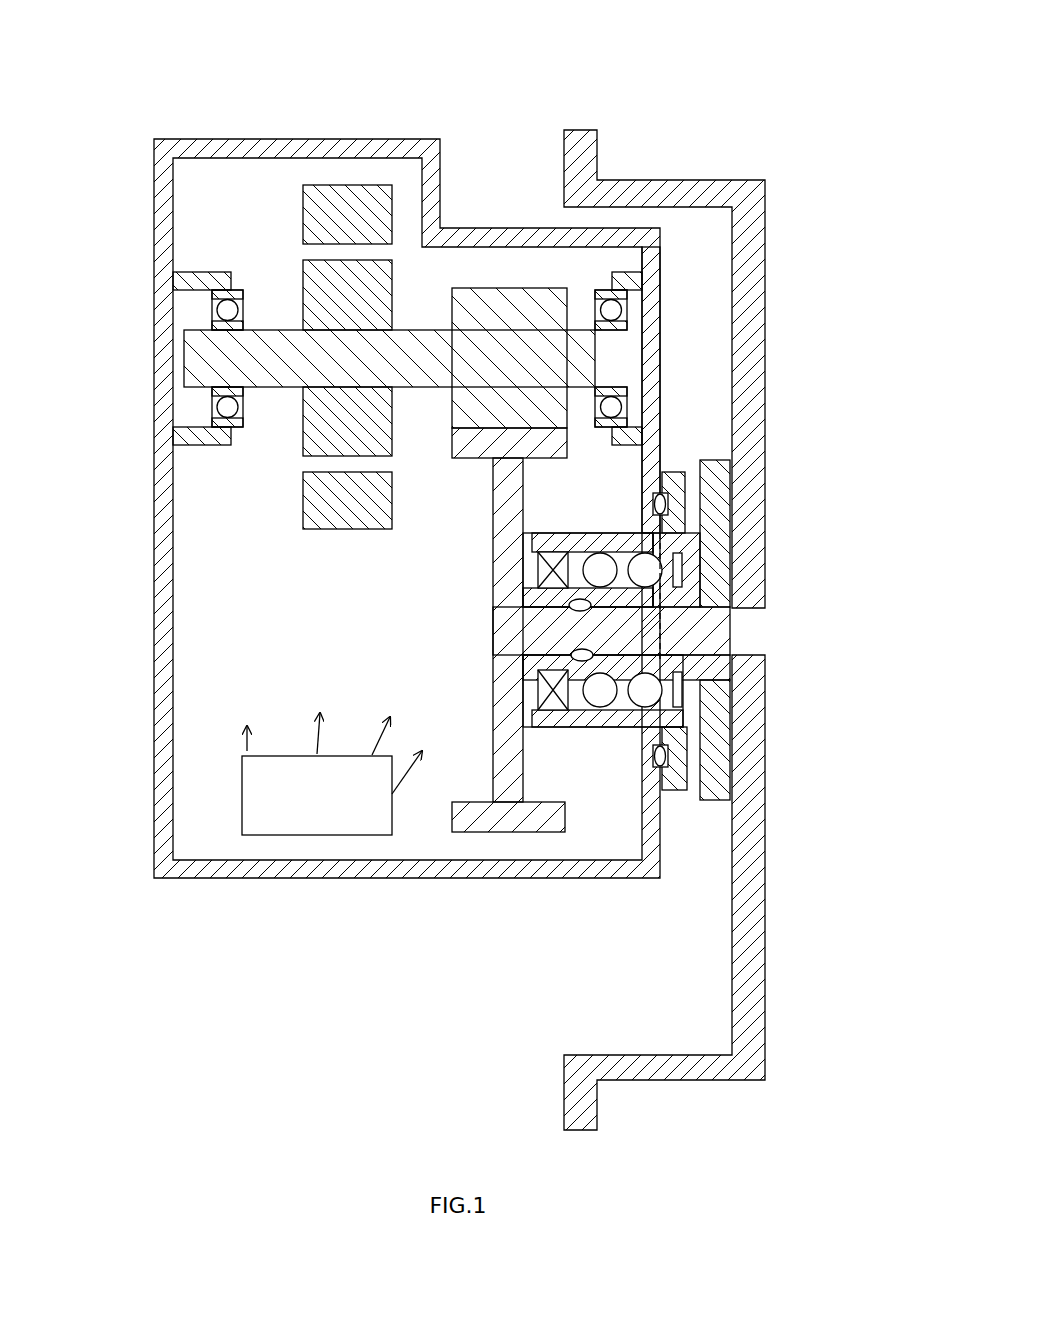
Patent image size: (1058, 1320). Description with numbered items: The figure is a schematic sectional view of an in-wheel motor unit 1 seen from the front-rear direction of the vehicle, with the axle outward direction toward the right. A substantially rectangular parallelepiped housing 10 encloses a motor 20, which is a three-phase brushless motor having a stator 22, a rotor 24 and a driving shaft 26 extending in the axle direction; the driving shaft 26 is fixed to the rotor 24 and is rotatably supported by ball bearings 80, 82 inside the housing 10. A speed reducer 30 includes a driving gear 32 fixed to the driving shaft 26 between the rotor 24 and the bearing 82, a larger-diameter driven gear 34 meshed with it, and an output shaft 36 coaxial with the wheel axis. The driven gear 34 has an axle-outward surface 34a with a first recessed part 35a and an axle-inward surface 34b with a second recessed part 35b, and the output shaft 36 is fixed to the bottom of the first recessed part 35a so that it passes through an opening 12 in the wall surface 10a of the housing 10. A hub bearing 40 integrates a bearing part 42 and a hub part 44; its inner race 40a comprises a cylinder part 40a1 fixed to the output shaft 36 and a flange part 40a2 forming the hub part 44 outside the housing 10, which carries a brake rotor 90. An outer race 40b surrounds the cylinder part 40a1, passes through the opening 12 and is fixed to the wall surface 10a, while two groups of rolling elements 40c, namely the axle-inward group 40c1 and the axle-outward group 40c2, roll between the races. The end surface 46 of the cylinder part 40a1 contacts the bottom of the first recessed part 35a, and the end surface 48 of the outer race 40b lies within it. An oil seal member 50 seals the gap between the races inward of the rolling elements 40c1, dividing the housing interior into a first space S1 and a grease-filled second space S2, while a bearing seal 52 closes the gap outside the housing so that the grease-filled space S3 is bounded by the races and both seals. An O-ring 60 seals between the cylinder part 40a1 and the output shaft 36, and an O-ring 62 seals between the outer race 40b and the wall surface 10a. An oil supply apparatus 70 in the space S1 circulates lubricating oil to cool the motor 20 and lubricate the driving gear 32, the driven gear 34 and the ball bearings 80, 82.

The in-wheel motor unit 1 is at (235, 97).
The housing 10 is at (154, 150).
The wall surface 10a is at (662, 312).
The opening 12 is at (688, 535).
The motor 20 is at (389, 289).
The stator 22 is at (353, 197).
The rotor 24 is at (377, 290).
The driving shaft 26 is at (423, 358).
The speed reducer 30 is at (555, 492).
The driving gear 32 is at (532, 300).
The driven gear 34 is at (555, 630).
The surface 34a is at (567, 447).
The surface 34b is at (452, 440).
The first recessed part 35a is at (537, 462).
The second recessed part 35b is at (470, 458).
The output shaft 36 is at (558, 630).
The hub bearing 40 is at (660, 757).
The inner race 40a is at (701, 727).
The cylinder part 40a1 is at (727, 673).
The flange part 40a2 is at (720, 737).
The outer race 40b is at (552, 723).
The rolling elements 40c is at (601, 689).
The rolling elements 40c1 is at (598, 702).
The rolling elements 40c2 is at (645, 695).
The bearing part 42 is at (593, 840).
The hub part 44 is at (715, 803).
The end surface 46 is at (523, 665).
The end surface 48 is at (535, 705).
The oil seal member 50 is at (553, 555).
The bearing seal 52 is at (684, 583).
The O-ring 60 is at (582, 598).
The O-ring 62 is at (680, 472).
The oil supply apparatus 70 is at (293, 820).
The ball bearing 80 is at (227, 293).
The ball bearing 82 is at (640, 278).
The brake rotor 90 is at (755, 278).
The first space S1 is at (227, 572).
The second space S2 is at (712, 557).
The space S3 is at (700, 575).